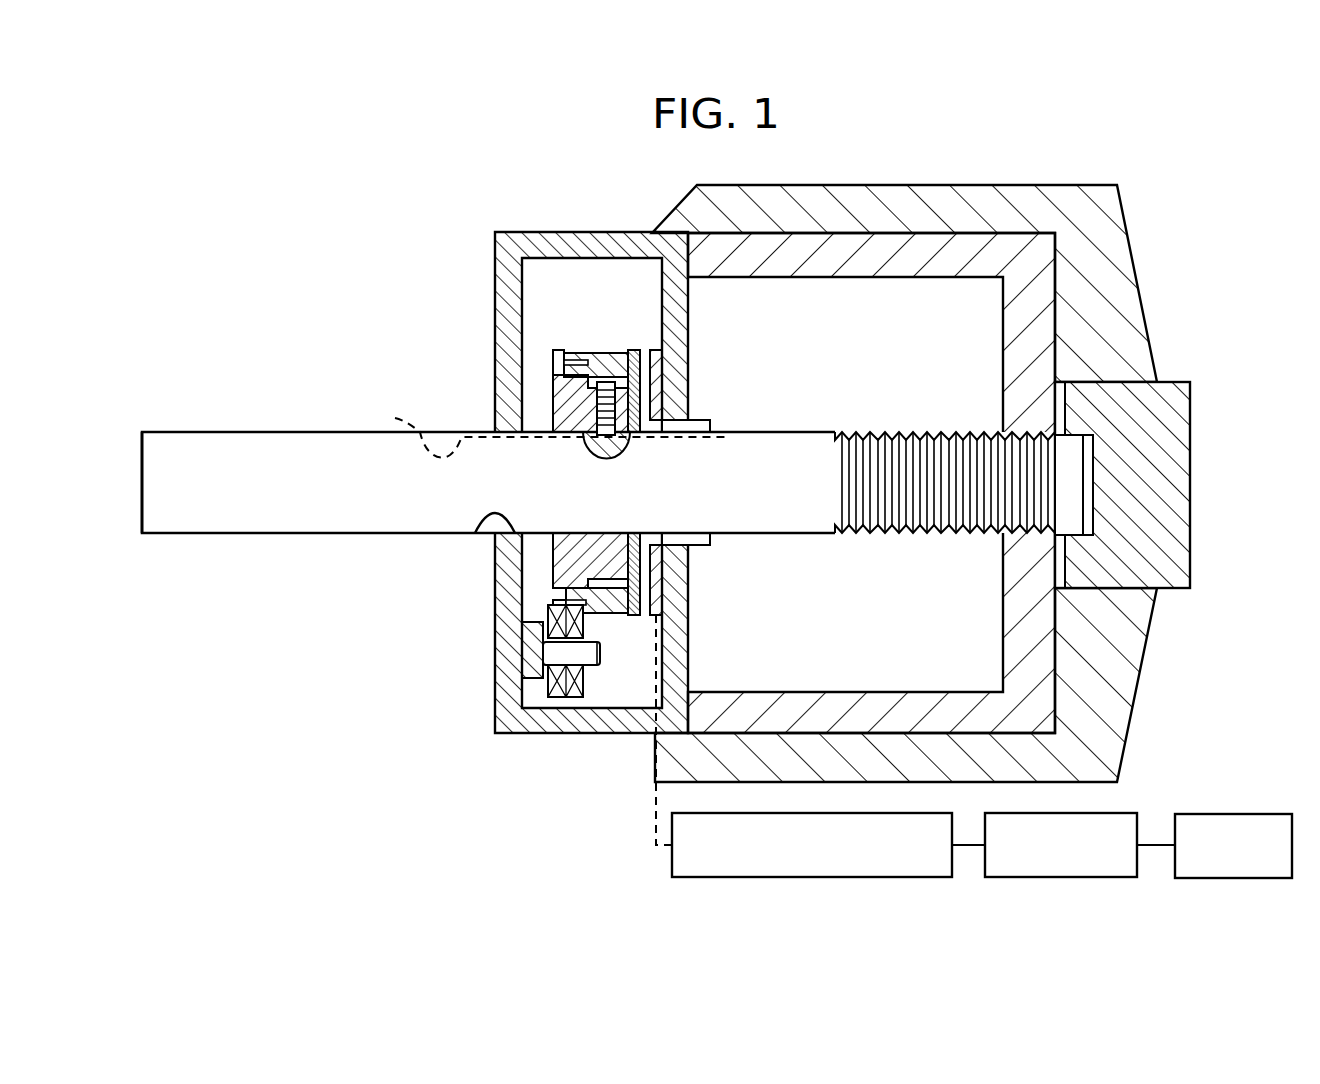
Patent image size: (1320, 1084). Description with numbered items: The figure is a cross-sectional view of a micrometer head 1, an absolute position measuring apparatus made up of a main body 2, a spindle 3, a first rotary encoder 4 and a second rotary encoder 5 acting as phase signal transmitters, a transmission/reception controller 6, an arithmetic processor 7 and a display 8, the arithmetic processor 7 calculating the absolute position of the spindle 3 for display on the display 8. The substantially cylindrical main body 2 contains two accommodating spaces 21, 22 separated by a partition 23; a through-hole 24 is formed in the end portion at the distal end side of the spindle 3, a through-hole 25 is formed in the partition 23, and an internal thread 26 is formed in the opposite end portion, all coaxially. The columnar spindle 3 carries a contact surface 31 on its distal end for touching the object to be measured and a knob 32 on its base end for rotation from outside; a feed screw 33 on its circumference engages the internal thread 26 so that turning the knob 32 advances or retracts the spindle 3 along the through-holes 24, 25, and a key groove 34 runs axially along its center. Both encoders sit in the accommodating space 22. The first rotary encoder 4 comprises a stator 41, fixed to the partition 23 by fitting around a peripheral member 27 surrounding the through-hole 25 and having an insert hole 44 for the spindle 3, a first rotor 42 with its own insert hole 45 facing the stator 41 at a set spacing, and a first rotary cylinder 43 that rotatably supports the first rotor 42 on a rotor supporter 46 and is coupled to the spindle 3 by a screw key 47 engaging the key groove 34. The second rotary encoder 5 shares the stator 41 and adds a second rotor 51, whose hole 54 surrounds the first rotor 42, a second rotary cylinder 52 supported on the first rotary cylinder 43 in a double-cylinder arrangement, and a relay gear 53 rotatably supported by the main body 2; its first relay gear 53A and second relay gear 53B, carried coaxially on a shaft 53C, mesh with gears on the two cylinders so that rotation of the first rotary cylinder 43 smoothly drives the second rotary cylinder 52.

The micrometer head 1 is at (1112, 132).
The main body 2 is at (846, 245).
The spindle 3 is at (770, 522).
The first rotary encoder 4 is at (545, 311).
The second rotary encoder 5 is at (552, 482).
The transmission/reception controller 6 is at (840, 880).
The arithmetic processor 7 is at (1095, 880).
The display 8 is at (1258, 880).
The accommodating space 21 is at (925, 300).
The accommodating space 22 is at (618, 679).
The partition 23 is at (689, 600).
The through-hole 24 is at (490, 535).
The through-hole 25 is at (714, 432).
The internal thread 26 is at (1005, 455).
The peripheral member 27 is at (660, 435).
The contact surface 31 is at (142, 465).
The knob 32 is at (1175, 489).
The feed screw 33 is at (915, 534).
The key groove 34 is at (545, 427).
The stator 41 is at (600, 341).
The first rotor 42 is at (640, 438).
The first rotary cylinder 43 is at (556, 410).
The insert hole 44 is at (664, 426).
The insert hole 45 is at (559, 656).
The rotor supporter 46 is at (605, 440).
The screw key 47 is at (583, 440).
The second rotor 51 is at (633, 350).
The second rotary cylinder 52 is at (606, 353).
The relay gear 53 is at (557, 712).
The first relay gear 53A is at (553, 700).
The second relay gear 53B is at (572, 700).
The shaft 53C is at (590, 665).
The hole 54 is at (661, 380).